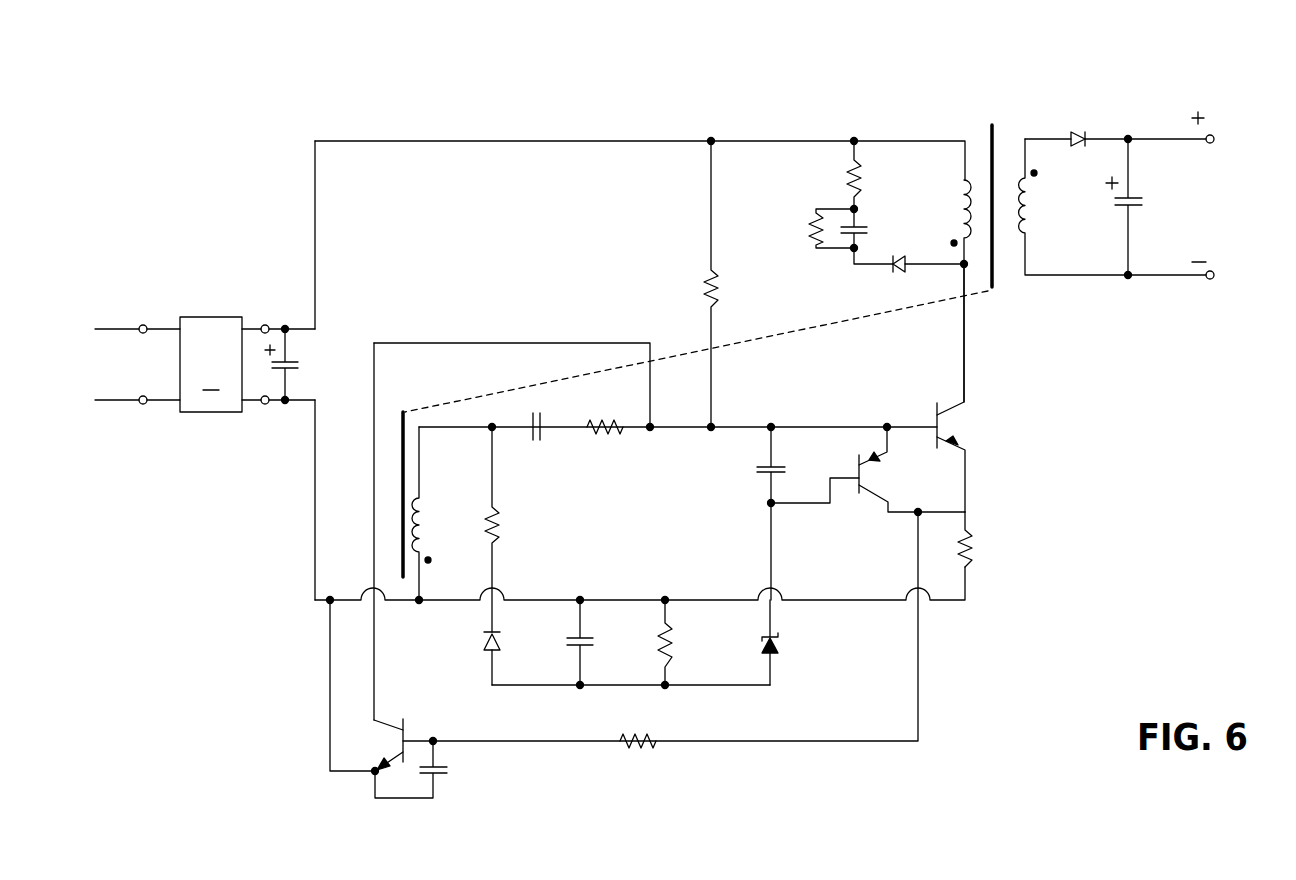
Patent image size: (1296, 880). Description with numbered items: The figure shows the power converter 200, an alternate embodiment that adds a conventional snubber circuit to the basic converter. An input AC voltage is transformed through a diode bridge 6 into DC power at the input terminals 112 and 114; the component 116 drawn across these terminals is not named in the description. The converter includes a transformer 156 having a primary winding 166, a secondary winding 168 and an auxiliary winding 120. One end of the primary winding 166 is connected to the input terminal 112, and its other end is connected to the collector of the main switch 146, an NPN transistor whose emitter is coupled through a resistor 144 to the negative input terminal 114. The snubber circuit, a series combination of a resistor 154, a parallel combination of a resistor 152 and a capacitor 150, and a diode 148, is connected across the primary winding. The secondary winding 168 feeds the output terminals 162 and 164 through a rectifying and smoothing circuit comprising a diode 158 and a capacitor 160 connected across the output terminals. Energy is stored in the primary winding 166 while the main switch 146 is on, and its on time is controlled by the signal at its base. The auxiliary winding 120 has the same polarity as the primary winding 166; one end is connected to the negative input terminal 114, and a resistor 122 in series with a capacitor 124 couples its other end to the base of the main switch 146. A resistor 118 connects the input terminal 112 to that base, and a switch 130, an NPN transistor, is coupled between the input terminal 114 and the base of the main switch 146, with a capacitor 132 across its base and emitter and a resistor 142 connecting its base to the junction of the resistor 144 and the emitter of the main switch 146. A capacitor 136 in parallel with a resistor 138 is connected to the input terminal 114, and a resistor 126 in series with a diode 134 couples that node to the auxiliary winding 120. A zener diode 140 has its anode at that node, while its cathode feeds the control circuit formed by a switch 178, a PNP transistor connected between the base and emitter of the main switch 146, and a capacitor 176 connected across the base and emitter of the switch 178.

The power converter 200 is at (338, 107).
The diode bridge 6 is at (210, 363).
The input terminal 112 is at (265, 324).
The negative input terminal 114 is at (265, 405).
The input filter capacitor 116 is at (300, 360).
The resistor 118 is at (711, 290).
The auxiliary winding 120 is at (422, 512).
The resistor 122 is at (622, 432).
The capacitor 124 is at (542, 437).
The resistor 126 is at (498, 526).
The switch 130 is at (406, 730).
The capacitor 132 is at (447, 776).
The diode 134 is at (486, 641).
The capacitor 136 is at (568, 641).
The resistor 138 is at (660, 643).
The zener diode 140 is at (779, 645).
The resistor 142 is at (638, 750).
The resistor 144 is at (972, 548).
The main switch 146 is at (952, 426).
The diode 148 is at (897, 272).
The capacitor 150 is at (868, 231).
The resistor 152 is at (814, 230).
The resistor 154 is at (854, 170).
The transformer 156 is at (990, 130).
The diode 158 is at (1076, 135).
The capacitor 160 is at (1142, 200).
The output terminal 162 is at (1213, 133).
The output terminal 164 is at (1207, 281).
The primary winding 166 is at (964, 200).
The secondary winding 168 is at (1028, 224).
The capacitor 176 is at (766, 474).
The switch 178 is at (872, 497).